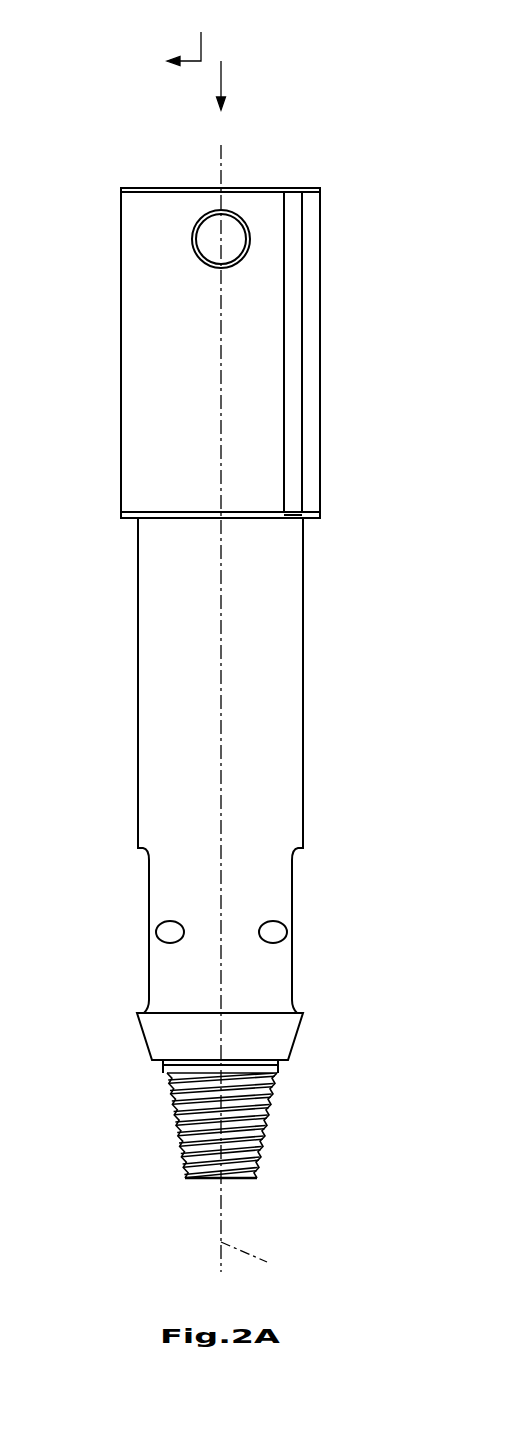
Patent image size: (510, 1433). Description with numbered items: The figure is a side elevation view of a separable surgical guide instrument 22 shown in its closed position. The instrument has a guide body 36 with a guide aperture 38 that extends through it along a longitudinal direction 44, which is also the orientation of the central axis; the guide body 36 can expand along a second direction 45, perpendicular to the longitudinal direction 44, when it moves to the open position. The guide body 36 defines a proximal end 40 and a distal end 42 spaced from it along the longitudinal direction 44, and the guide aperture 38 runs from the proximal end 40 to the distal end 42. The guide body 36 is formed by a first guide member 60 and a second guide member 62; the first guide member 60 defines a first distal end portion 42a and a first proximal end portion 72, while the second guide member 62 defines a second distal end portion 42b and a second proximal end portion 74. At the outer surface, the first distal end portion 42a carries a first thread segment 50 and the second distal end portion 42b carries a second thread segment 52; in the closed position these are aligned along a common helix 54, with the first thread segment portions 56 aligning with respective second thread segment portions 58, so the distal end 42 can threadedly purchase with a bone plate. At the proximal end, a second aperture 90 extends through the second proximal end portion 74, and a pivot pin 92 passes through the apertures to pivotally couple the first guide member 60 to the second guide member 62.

The separable surgical guide instrument 22 is at (134, 137).
The guide body 36 is at (109, 356).
The guide aperture 38 is at (266, 183).
The proximal end 40 is at (297, 187).
The distal end 42 is at (267, 1100).
The first distal end portion 42a is at (262, 1143).
The second distal end portion 42b is at (175, 1120).
The longitudinal direction 44 is at (222, 83).
The second direction 45 is at (189, 37).
The first thread segment 50 is at (272, 1090).
The second thread segment 52 is at (168, 1088).
The common helix 54 is at (200, 1138).
The first thread segment portions 56 is at (250, 1186).
The second thread segment portions 58 is at (203, 1183).
The first guide member 60 is at (282, 641).
The second guide member 62 is at (149, 653).
The first proximal end portion 72 is at (321, 271).
The second proximal end portion 74 is at (121, 250).
The second aperture 90 is at (233, 262).
The pivot pin 92 is at (228, 240).